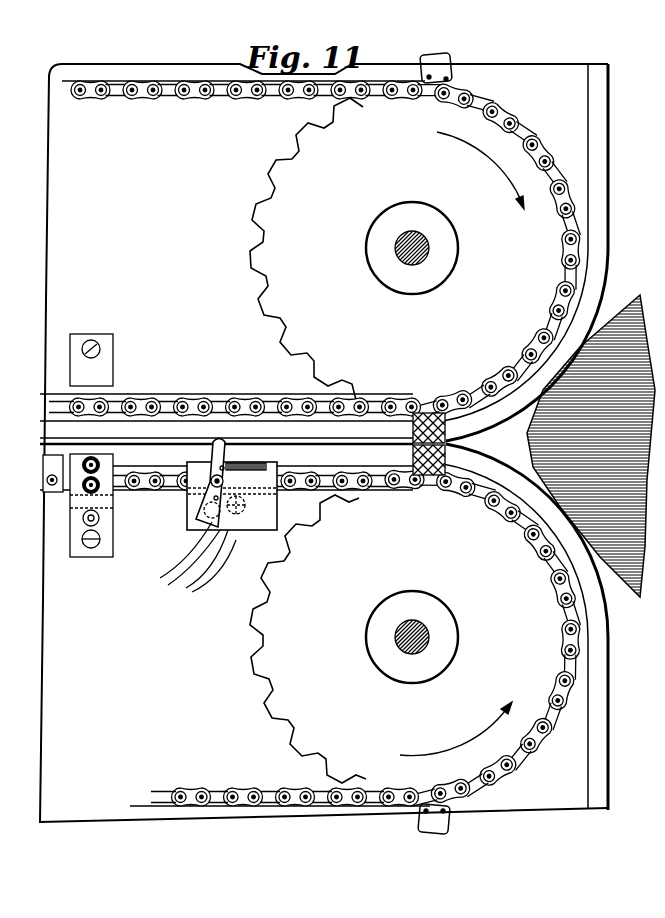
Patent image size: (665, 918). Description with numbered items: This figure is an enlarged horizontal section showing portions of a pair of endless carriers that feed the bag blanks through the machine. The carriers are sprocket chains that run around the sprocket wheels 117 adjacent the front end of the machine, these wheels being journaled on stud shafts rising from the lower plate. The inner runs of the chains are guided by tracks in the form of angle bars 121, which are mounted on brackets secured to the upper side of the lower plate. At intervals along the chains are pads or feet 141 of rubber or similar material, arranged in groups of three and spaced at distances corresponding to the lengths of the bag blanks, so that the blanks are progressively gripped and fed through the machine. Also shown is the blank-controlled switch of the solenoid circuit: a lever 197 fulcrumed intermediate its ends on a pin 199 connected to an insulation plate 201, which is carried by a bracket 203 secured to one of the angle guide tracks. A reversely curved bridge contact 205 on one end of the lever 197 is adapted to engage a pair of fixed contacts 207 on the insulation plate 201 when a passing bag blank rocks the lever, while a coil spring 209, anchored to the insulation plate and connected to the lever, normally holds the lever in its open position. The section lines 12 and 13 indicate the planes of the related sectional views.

The section line 12- 12 is at (148, 539).
The section line 13- 13 is at (60, 542).
The sprocket wheels 117 is at (272, 197).
The angle bars 121 is at (160, 396).
The pads or feet 141 is at (432, 414).
The lever 197 is at (225, 457).
The pin 199 is at (224, 482).
The insulation plate 201 is at (275, 503).
The bracket 203 is at (241, 511).
The bridge contact 205 is at (212, 532).
The fixed contacts 207 is at (240, 532).
The coil spring 209 is at (270, 463).